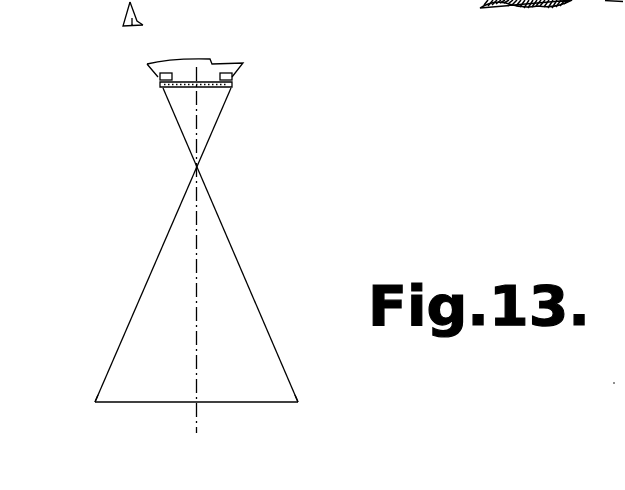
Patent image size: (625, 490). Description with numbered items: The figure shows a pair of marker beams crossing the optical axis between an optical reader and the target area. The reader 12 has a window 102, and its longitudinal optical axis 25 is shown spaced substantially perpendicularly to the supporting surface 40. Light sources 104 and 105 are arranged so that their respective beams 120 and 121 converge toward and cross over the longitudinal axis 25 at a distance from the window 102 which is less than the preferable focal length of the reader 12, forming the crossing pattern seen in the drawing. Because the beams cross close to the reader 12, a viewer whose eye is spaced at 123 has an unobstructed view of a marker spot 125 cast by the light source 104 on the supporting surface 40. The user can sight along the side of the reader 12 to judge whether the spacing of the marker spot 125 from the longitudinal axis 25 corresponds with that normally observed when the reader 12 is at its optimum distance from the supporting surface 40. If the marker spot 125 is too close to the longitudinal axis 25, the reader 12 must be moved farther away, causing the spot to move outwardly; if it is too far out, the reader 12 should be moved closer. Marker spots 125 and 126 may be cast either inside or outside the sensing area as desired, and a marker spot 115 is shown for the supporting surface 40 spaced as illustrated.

The reader 12 is at (177, 65).
The longitudinal optical axis 25 is at (195, 285).
The supporting surface 40 is at (233, 402).
The window 102 is at (210, 74).
The light source 104 is at (233, 74).
The light source 105 is at (159, 78).
The marker spot 115 is at (487, 5).
The beam 120 is at (181, 203).
The beam 121 is at (208, 195).
The eye 123 is at (123, 15).
The marker spot 125 is at (95, 401).
The marker spot 126 is at (298, 401).